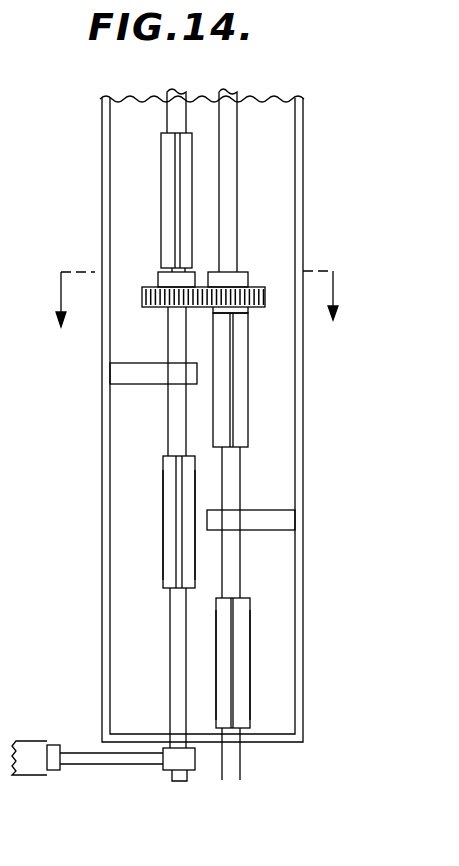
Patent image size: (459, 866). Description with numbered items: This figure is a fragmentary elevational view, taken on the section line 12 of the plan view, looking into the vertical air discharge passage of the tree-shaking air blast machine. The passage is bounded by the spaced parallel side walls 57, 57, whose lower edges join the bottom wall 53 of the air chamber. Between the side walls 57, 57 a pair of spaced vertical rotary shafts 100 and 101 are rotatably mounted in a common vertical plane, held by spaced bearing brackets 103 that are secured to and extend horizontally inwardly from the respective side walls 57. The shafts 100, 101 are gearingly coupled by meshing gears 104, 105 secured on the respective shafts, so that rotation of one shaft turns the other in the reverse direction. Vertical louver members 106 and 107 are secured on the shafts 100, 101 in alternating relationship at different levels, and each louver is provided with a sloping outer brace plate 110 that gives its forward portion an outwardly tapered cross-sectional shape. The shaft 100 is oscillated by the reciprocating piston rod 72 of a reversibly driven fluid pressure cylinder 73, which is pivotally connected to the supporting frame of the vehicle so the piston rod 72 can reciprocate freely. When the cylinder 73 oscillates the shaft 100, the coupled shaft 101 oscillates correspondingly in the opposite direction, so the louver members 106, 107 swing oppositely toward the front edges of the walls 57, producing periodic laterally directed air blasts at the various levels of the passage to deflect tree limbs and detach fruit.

The section line 12- 12 is at (202, 283).
The bottom wall 53 is at (268, 744).
The side wall 57 is at (102, 500).
The piston rod 72 is at (78, 755).
The fluid pressure cylinder 73 is at (32, 748).
The vertical rotary shaft 100 is at (168, 112).
The vertical rotary shaft 101 is at (232, 115).
The bearing bracket 103 is at (133, 378).
The gear 104 is at (143, 286).
The gear 105 is at (257, 285).
The vertical louver member 106 is at (177, 188).
The vertical louver member 107 is at (233, 390).
The outer brace plate 110 is at (170, 507).